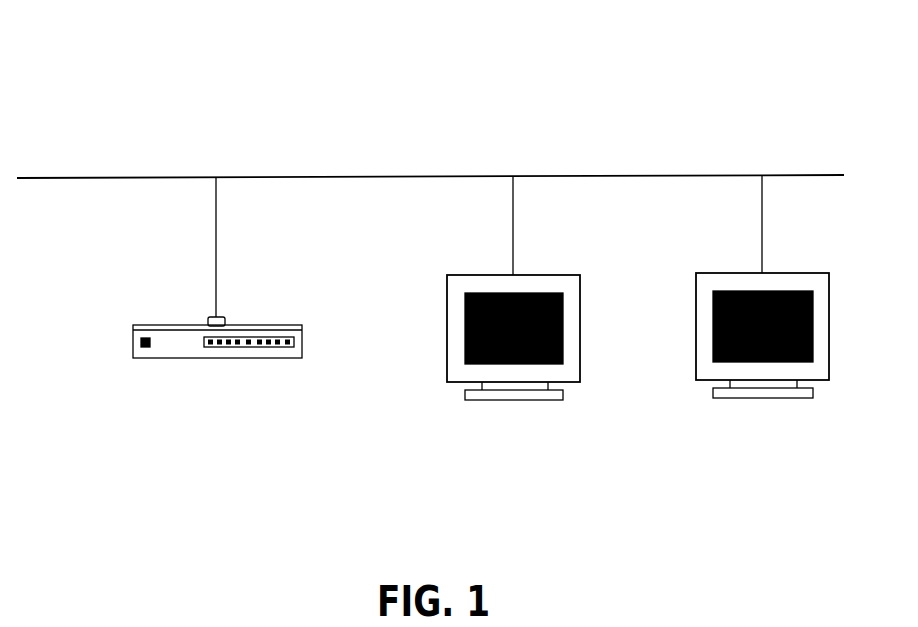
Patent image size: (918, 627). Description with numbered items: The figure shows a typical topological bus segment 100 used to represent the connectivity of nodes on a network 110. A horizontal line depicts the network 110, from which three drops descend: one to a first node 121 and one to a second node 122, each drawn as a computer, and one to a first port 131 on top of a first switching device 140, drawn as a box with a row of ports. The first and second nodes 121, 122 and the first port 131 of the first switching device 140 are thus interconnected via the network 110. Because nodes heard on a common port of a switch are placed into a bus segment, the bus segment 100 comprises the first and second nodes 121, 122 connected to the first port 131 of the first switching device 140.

The topological bus segment 100 is at (428, 83).
The network 110 is at (646, 176).
The first node 121 is at (537, 275).
The second node 122 is at (786, 273).
The first port 131 is at (213, 317).
The first switching device 140 is at (243, 358).